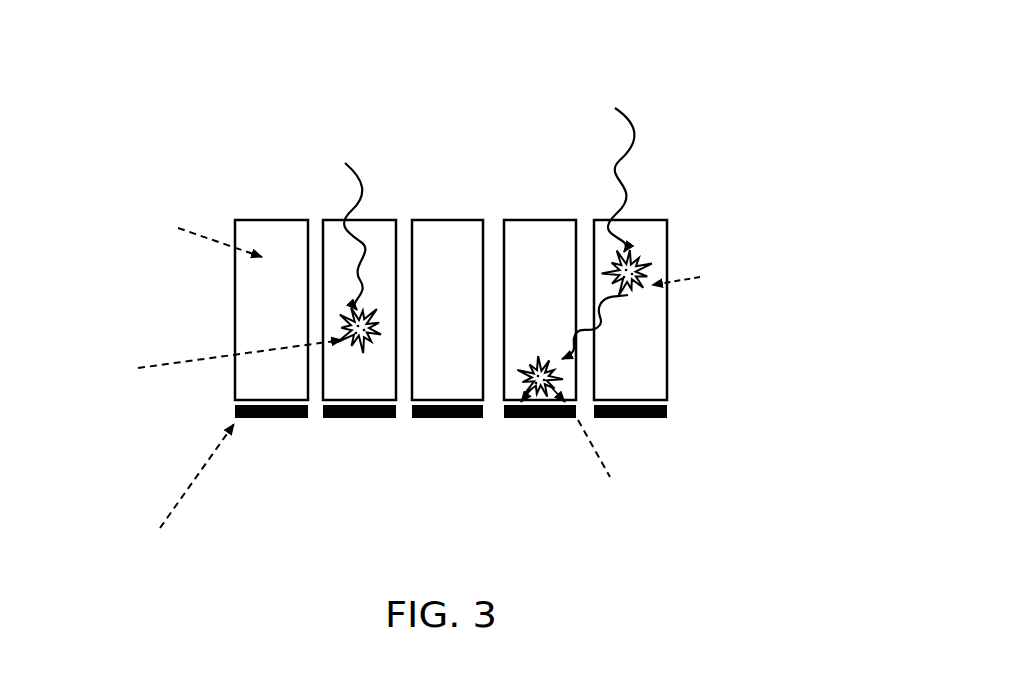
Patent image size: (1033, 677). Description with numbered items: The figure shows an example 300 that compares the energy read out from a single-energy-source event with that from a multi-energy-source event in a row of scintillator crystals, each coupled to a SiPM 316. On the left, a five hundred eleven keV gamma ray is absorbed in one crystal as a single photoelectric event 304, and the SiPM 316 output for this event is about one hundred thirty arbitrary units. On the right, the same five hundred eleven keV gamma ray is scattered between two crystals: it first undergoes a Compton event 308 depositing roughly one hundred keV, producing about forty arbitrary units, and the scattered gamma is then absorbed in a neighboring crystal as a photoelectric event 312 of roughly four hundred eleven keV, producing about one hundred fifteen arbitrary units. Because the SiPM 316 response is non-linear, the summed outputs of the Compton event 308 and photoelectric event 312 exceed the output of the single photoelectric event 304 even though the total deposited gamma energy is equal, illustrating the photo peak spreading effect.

The example 300 is at (412, 37).
The single 511 keV photoelectric event 304 is at (344, 325).
The Compton event 308 is at (652, 262).
The photoelectric event 312 is at (517, 420).
The SiPM 316 is at (343, 421).